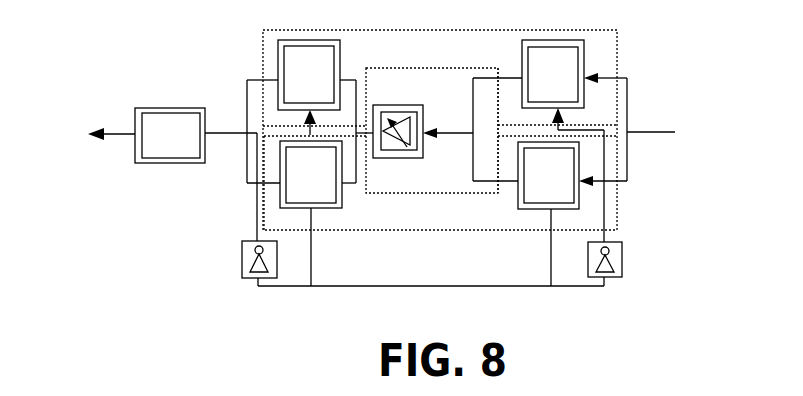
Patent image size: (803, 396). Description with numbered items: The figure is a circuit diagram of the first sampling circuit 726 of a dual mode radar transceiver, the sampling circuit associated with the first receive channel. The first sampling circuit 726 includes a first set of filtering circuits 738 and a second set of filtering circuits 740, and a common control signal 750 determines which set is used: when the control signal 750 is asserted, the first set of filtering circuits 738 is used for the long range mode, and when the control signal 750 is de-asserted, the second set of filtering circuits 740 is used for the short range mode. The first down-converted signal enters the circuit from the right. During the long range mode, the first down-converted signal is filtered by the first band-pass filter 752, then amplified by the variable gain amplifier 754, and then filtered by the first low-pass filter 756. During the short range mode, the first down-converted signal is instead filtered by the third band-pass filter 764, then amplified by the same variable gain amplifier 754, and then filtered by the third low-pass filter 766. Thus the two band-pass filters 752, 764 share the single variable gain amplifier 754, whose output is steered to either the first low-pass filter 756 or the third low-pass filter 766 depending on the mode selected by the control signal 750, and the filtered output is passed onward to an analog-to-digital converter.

The first sampling circuit 726 is at (113, 67).
The first set of filtering circuits 738 is at (560, 30).
The second set of filtering circuits 740 is at (617, 212).
The common control signal 750 is at (426, 286).
The first band-pass filter 752 is at (584, 70).
The variable gain amplifier 754 is at (392, 105).
The first low-pass filter 756 is at (307, 40).
The third band-pass filter 764 is at (518, 200).
The third low-pass filter 766 is at (342, 203).